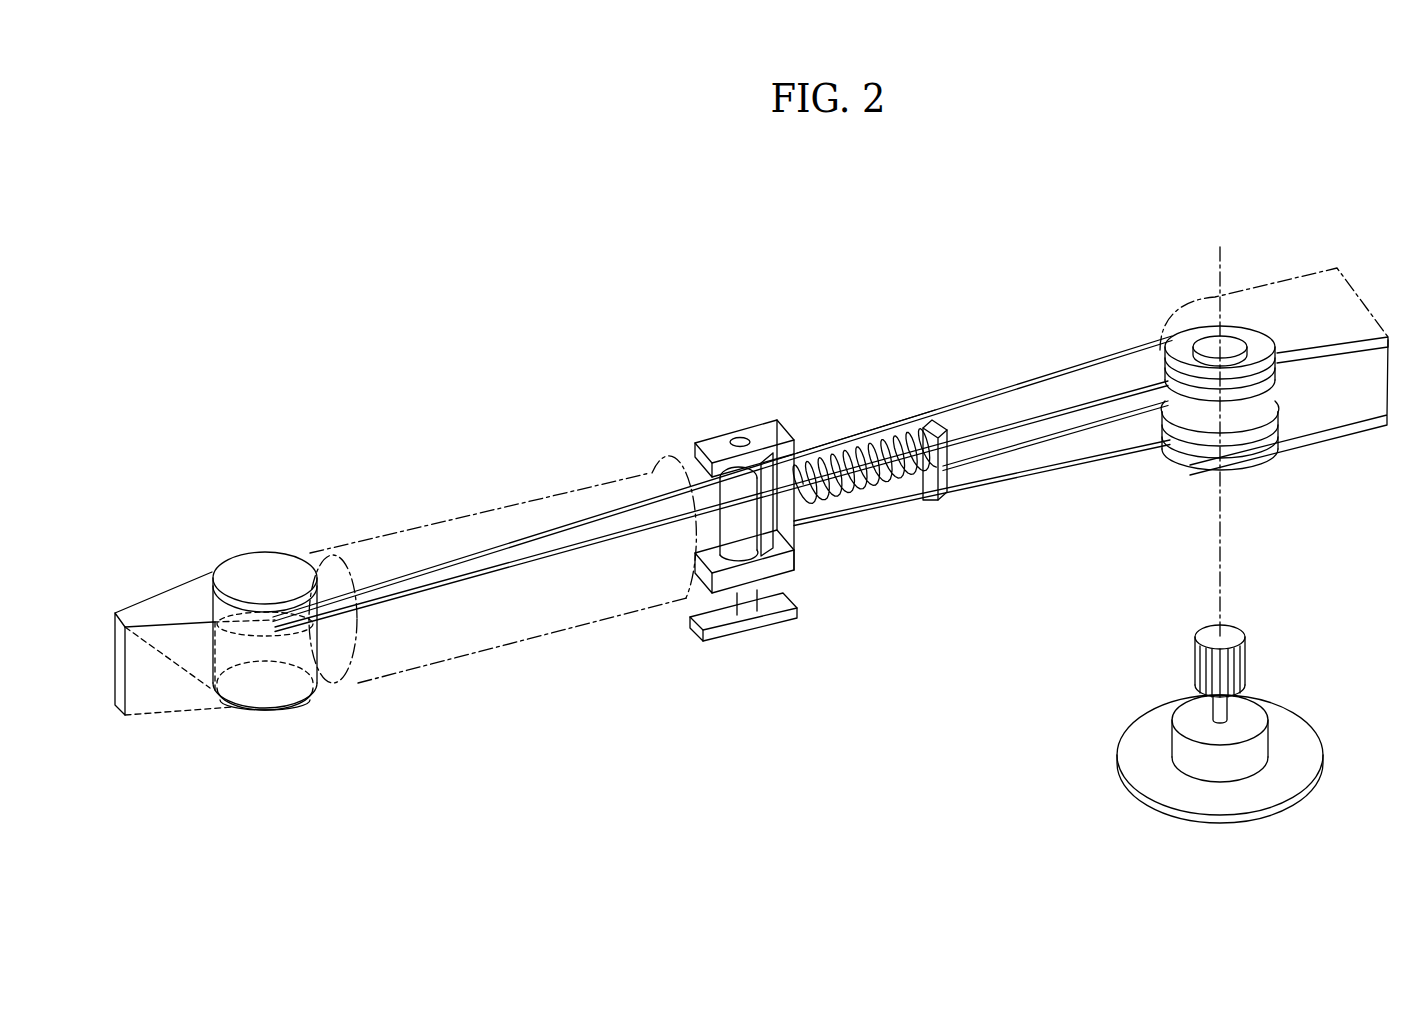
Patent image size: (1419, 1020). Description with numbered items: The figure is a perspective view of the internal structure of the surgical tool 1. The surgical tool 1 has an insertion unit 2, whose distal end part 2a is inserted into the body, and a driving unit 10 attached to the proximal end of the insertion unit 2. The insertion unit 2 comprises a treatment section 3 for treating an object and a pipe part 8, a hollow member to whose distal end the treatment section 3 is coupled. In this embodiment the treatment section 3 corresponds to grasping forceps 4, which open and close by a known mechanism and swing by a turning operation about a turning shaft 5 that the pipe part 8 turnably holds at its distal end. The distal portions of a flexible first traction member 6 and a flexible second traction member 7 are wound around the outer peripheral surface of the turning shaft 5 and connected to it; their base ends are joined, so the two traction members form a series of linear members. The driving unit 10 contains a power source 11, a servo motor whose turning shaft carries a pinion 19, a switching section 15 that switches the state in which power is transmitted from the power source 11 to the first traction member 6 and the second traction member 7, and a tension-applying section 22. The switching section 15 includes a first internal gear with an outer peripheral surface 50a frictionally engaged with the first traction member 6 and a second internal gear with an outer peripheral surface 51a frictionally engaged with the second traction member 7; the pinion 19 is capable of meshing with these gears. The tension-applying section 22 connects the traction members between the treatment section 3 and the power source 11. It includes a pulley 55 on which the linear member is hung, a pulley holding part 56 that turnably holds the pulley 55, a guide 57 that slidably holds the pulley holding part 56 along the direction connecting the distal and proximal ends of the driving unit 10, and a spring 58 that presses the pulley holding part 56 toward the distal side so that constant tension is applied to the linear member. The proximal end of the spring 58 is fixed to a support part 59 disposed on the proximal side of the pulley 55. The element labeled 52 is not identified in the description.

The surgical tool 1 is at (1094, 290).
The insertion unit 2 is at (321, 406).
The distal end part 2a is at (278, 735).
The treatment section 3 is at (230, 486).
The grasping forceps 4 is at (171, 566).
The turning shaft 5 is at (283, 558).
The first traction member 6 is at (428, 553).
The second traction member 7 is at (450, 585).
The pipe part 8 is at (520, 500).
The driving unit 10 is at (1312, 471).
The power source 11 is at (1282, 698).
The switching section 15 is at (1098, 526).
The pinion 19 is at (1250, 654).
The tension-applying section 22 is at (876, 515).
The outer peripheral surface 50a is at (1188, 425).
The outer peripheral surface 51a is at (1265, 412).
The support arm 52 is at (1345, 395).
The pulley 55 is at (755, 545).
The pulley holding part 56 is at (710, 437).
The guide 57 is at (728, 630).
The spring 58 is at (825, 452).
The support part 59 is at (933, 490).